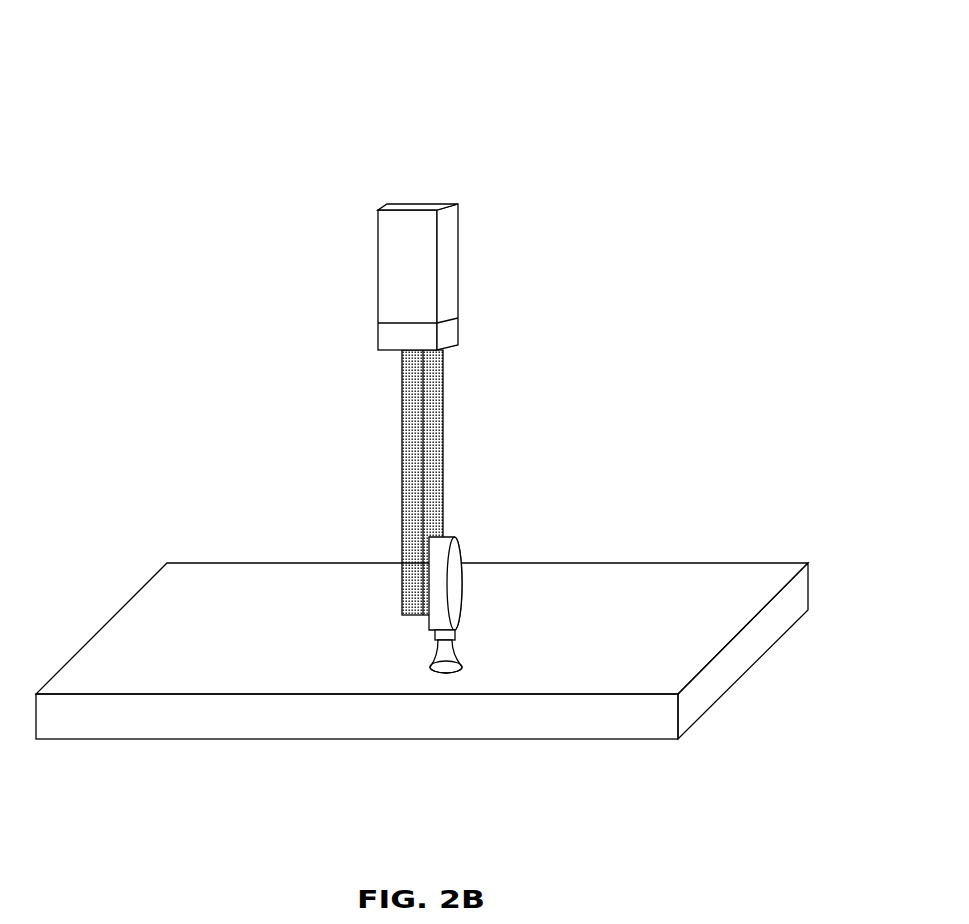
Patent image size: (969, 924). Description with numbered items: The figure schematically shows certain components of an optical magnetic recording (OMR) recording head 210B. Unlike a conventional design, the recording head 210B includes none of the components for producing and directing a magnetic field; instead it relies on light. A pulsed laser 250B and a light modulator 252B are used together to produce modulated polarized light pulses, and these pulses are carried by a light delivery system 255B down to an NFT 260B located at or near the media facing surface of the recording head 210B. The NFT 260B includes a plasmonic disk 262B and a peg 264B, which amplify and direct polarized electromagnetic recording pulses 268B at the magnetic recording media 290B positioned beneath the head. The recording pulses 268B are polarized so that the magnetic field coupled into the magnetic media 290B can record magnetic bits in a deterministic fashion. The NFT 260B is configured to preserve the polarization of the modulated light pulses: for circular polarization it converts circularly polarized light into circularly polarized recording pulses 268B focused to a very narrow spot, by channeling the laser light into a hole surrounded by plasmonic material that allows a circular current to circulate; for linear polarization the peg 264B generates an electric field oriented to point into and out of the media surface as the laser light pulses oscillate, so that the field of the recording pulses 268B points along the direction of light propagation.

The OMR recording head 210B is at (539, 98).
The pulsed laser 250B is at (455, 270).
The light modulator 252B is at (455, 333).
The light delivery system 255B is at (437, 429).
The NFT 260B is at (446, 587).
The plasmonic disk 262B is at (437, 573).
The peg 264B is at (436, 637).
The electromagnetic recording pulses 268B is at (450, 650).
The magnetic recording media 290B is at (695, 705).